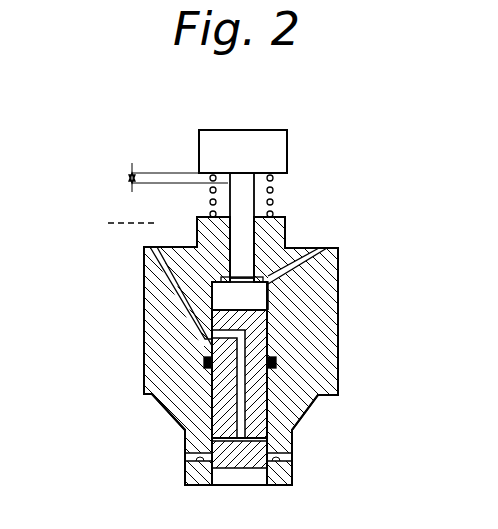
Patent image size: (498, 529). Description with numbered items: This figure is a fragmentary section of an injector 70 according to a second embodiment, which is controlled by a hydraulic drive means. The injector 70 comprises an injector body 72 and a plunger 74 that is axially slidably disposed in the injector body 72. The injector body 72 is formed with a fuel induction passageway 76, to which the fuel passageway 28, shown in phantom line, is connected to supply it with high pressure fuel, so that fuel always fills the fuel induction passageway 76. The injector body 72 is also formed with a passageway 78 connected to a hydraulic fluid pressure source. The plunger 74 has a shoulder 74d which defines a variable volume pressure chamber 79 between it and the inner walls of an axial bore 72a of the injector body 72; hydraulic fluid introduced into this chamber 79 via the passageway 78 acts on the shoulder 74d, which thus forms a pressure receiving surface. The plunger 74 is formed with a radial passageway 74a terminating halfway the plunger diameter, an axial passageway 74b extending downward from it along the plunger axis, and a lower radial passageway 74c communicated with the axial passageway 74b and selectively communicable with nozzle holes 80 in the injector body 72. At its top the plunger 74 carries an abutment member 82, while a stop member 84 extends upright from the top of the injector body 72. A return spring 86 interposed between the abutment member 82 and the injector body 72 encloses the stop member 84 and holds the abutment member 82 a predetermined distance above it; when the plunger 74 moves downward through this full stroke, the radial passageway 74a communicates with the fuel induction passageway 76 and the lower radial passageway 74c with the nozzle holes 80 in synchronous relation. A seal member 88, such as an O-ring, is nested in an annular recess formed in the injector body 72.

The injector 70 is at (362, 222).
The injector body 72 is at (338, 322).
The axial bore 72a is at (305, 410).
The plunger 74 is at (212, 427).
The radial passageway 74a is at (265, 307).
The axial passageway 74b is at (292, 433).
The lower radial passageway 74c is at (236, 468).
The shoulder 74d is at (157, 223).
The fuel induction passageway 76 is at (167, 298).
The passageway 78 is at (338, 266).
The variable volume pressure chamber 79 is at (282, 238).
The nozzle holes 80 is at (200, 458).
The abutment member 82 is at (287, 148).
The stop member 84 is at (227, 197).
The return spring 86 is at (273, 200).
The seal member 88 is at (276, 362).
The fuel passageway 28 is at (111, 228).